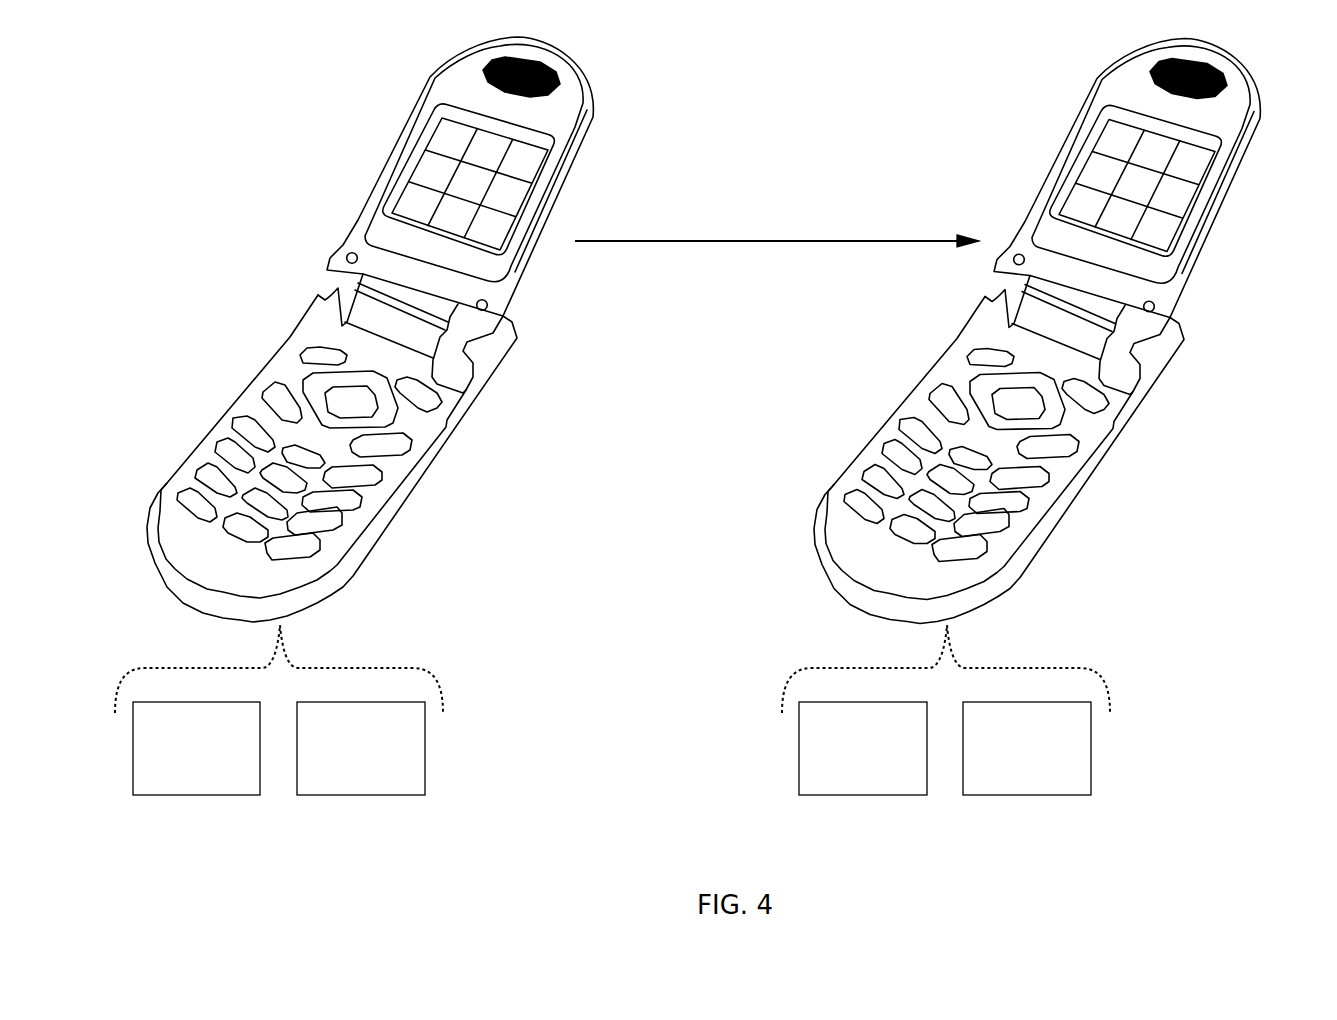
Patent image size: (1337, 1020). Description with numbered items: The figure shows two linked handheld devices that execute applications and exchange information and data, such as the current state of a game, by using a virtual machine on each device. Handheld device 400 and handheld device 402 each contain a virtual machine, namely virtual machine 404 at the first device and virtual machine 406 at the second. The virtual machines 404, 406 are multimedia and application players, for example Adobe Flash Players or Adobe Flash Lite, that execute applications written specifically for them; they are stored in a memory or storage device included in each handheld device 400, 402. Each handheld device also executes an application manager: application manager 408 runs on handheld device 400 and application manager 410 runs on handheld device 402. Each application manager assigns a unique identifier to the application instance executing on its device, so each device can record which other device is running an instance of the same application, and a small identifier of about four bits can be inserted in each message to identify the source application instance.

The handheld device 400 is at (596, 108).
The handheld device 402 is at (1263, 112).
The virtual machine 404 is at (188, 797).
The virtual machine 406 is at (868, 797).
The application manager 408 is at (358, 797).
The application manager 410 is at (1033, 797).